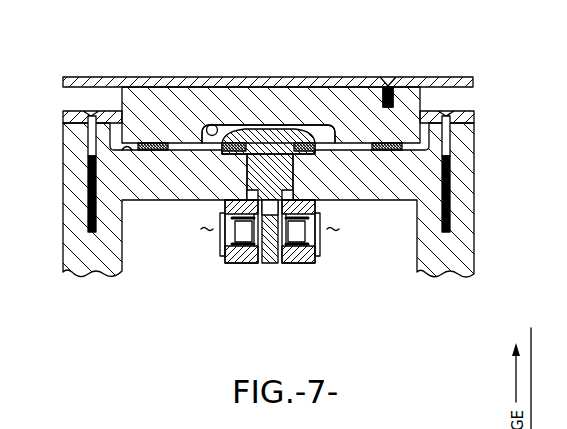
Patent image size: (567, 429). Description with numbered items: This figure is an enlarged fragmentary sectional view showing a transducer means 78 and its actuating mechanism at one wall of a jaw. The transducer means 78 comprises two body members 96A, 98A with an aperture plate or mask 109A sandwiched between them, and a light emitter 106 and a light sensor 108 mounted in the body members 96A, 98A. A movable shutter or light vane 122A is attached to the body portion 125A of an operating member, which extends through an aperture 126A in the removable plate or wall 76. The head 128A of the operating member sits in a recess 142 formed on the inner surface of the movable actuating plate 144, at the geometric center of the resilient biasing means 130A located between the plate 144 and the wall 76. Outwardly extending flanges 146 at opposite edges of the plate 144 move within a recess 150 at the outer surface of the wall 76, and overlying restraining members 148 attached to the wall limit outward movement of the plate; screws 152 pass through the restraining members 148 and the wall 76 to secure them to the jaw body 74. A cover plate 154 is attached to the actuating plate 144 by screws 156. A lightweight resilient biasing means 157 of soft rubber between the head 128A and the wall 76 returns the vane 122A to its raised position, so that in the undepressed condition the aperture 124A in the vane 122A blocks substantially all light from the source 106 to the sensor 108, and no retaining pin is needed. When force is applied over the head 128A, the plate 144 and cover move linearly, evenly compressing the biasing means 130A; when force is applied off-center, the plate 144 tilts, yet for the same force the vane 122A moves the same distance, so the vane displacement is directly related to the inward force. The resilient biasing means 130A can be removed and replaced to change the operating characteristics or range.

The cover plate 154 is at (474, 82).
The actuating plate 144 is at (175, 102).
The lightweight resilient biasing means 157 is at (343, 130).
The screws 156 is at (389, 78).
The head 128A is at (264, 128).
The recess 142 is at (210, 125).
The resilient biasing means 130A is at (150, 143).
The jaw body 74 is at (314, 200).
The removable plate or wall 76 is at (476, 178).
The outwardly extending flanges 146 is at (128, 127).
The restraining members 148 is at (63, 117).
The recess 150 is at (90, 188).
The screws 152 is at (449, 147).
The body portion of the operating member 125A is at (293, 180).
The body member 96A is at (221, 208).
The aperture 126A is at (224, 204).
The aperture 124A is at (253, 262).
The aperture plate or mask 109A is at (258, 264).
The light emitter 106 is at (219, 242).
The movable shutter or light vane 122A is at (266, 264).
The body member 98A is at (317, 200).
The transducer means 78 is at (312, 271).
The light sensor 108 is at (309, 238).